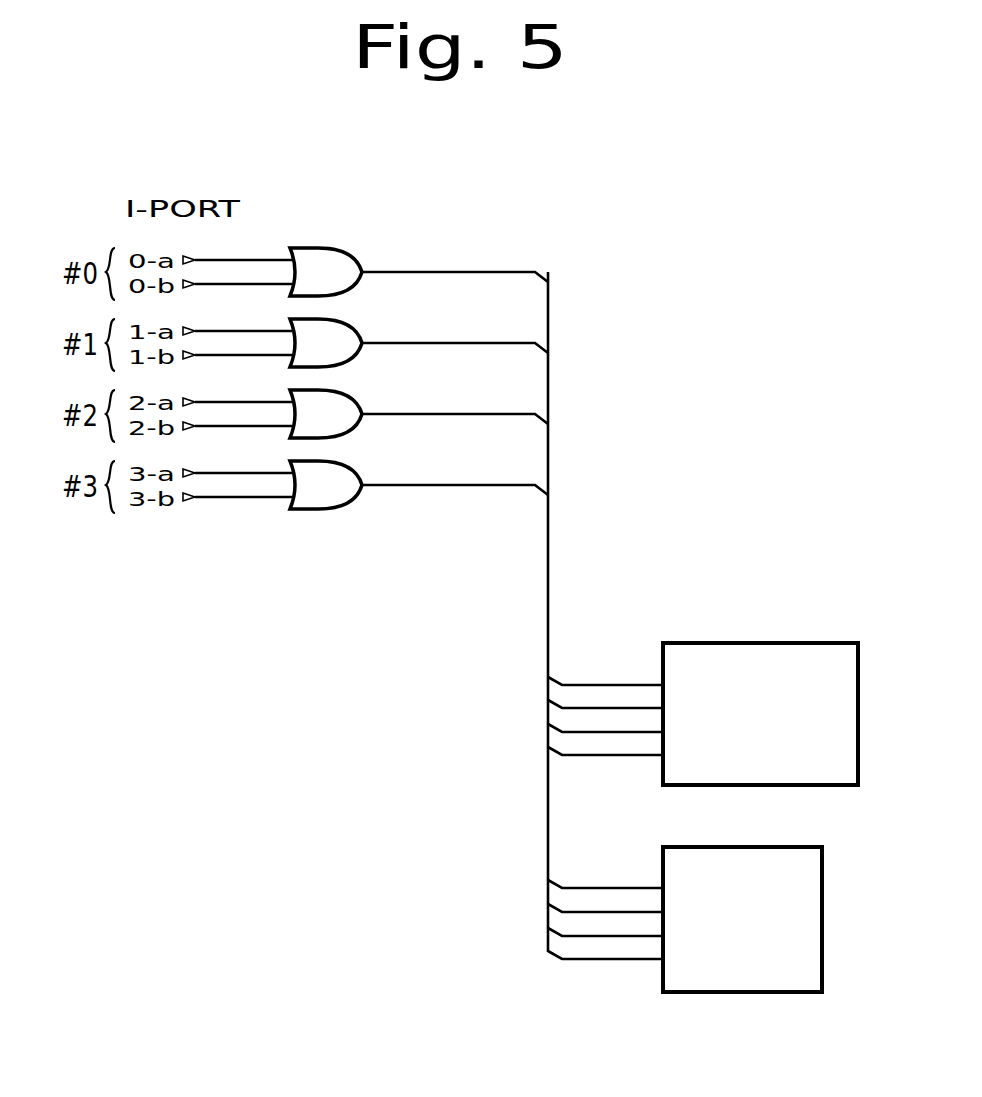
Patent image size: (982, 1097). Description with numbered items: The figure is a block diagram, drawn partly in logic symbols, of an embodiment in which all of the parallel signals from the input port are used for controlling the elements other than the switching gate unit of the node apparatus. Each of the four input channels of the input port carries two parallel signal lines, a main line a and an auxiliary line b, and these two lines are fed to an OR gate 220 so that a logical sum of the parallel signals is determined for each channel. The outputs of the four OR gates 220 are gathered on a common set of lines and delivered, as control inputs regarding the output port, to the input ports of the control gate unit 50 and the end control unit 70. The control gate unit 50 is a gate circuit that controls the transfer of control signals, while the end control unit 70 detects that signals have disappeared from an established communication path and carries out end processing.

The OR gate 220 is at (328, 248).
The control gate unit 50 is at (858, 716).
The end control unit 70 is at (822, 921).